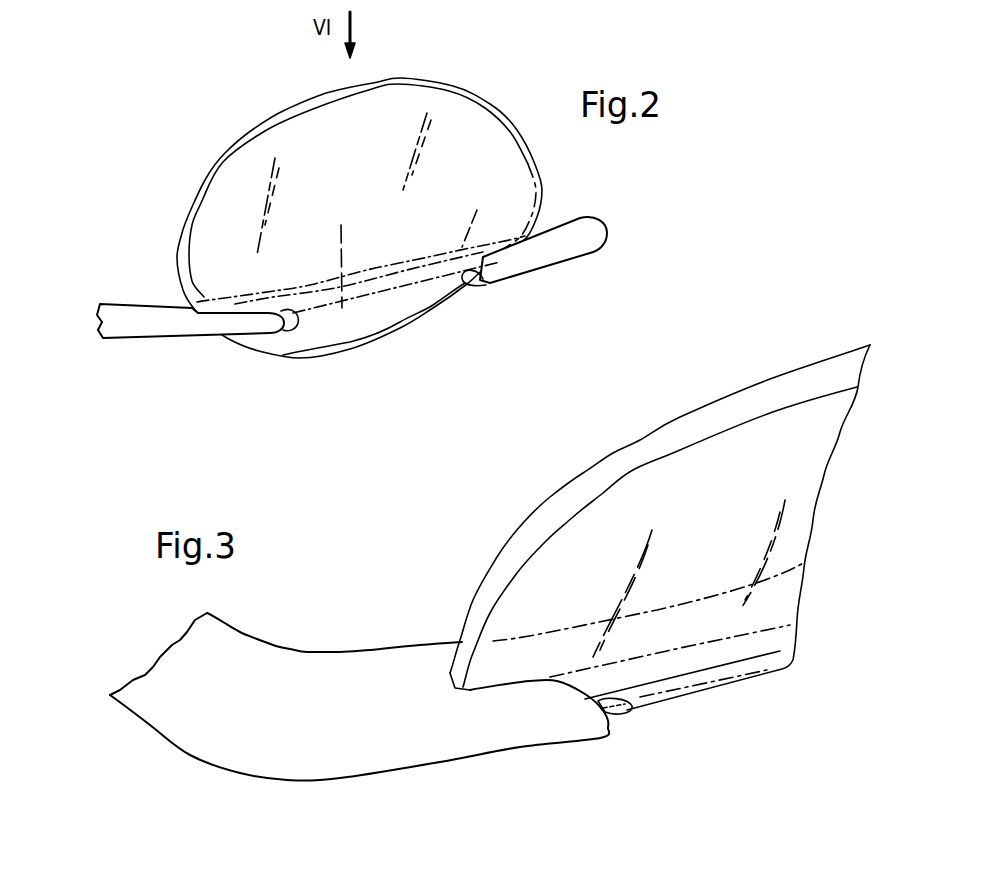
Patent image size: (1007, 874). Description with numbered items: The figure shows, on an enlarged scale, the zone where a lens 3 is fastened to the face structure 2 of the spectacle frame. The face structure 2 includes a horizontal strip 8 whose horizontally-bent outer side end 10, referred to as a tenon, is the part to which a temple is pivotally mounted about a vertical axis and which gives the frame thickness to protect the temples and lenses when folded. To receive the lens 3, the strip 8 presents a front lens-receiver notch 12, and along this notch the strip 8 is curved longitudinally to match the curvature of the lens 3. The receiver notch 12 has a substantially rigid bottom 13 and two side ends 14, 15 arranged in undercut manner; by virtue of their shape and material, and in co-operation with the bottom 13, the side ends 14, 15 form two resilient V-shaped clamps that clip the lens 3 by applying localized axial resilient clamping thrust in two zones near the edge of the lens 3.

In FIG. 2, the face structure 2 is at (156, 302).
In FIG. 3, the face structure 2 is at (333, 632).
In FIG. 2, the lens 3 is at (477, 106).
In FIG. 3, the lens 3 is at (588, 477).
In FIG. 2, the strip 8 is at (565, 254).
In FIG. 3, the strip 8 is at (446, 748).
In FIG. 3, the outer side end 10 is at (194, 742).
In FIG. 2, the lens-receiver notch 12 is at (326, 326).
In FIG. 3, the lens-receiver notch 12 is at (710, 718).
In FIG. 2, the bottom 13 is at (416, 290).
In FIG. 3, the bottom 13 is at (765, 648).
In FIG. 2, the side end 14 is at (295, 320).
In FIG. 3, the side end 14 is at (623, 713).
In FIG. 2, the side end 15 is at (466, 281).